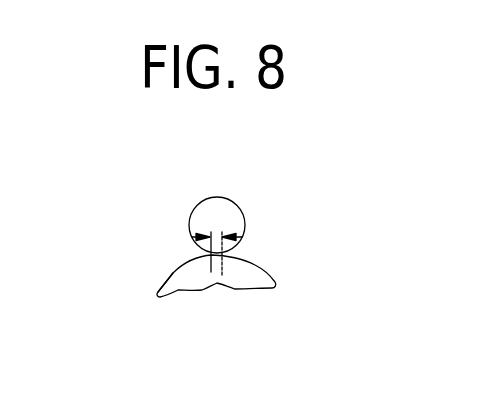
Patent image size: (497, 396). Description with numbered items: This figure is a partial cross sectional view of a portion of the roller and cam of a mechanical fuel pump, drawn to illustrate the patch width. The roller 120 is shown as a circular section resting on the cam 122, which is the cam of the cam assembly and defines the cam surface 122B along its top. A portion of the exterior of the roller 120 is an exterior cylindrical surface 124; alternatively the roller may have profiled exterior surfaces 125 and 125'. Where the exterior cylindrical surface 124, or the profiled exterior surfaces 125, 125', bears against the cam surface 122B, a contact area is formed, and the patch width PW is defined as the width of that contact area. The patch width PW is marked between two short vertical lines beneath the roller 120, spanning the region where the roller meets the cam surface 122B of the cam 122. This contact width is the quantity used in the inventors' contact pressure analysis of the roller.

The roller 120 is at (223, 215).
The exterior cylindrical surface 124 is at (200, 204).
The profiled exterior surface 125 is at (161, 155).
The profiled exterior surface 125' is at (209, 155).
The patch width PW is at (248, 236).
The cam 122 is at (252, 270).
The cam surface 122B is at (172, 273).